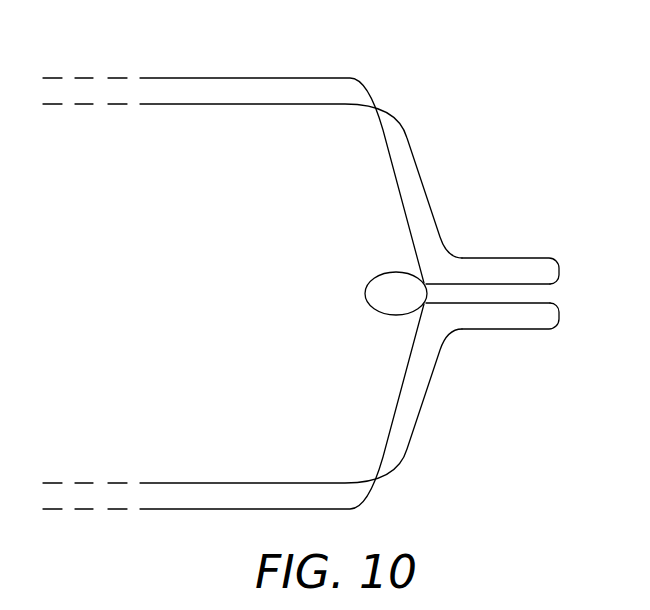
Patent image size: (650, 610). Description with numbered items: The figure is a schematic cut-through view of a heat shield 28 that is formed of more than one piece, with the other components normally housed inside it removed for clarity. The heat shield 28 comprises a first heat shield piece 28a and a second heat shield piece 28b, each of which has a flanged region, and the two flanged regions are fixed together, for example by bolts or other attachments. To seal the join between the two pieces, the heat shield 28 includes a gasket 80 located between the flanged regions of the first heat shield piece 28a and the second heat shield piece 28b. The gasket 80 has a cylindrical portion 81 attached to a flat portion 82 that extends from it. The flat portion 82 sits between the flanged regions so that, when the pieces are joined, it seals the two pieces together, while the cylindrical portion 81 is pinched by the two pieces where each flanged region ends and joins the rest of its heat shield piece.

The heat shield 28 is at (268, 266).
The first heat shield piece 28a is at (411, 172).
The second heat shield piece 28b is at (411, 415).
The gasket 80 is at (552, 290).
The cylindrical portion 81 is at (370, 294).
The flat portion 82 is at (505, 295).